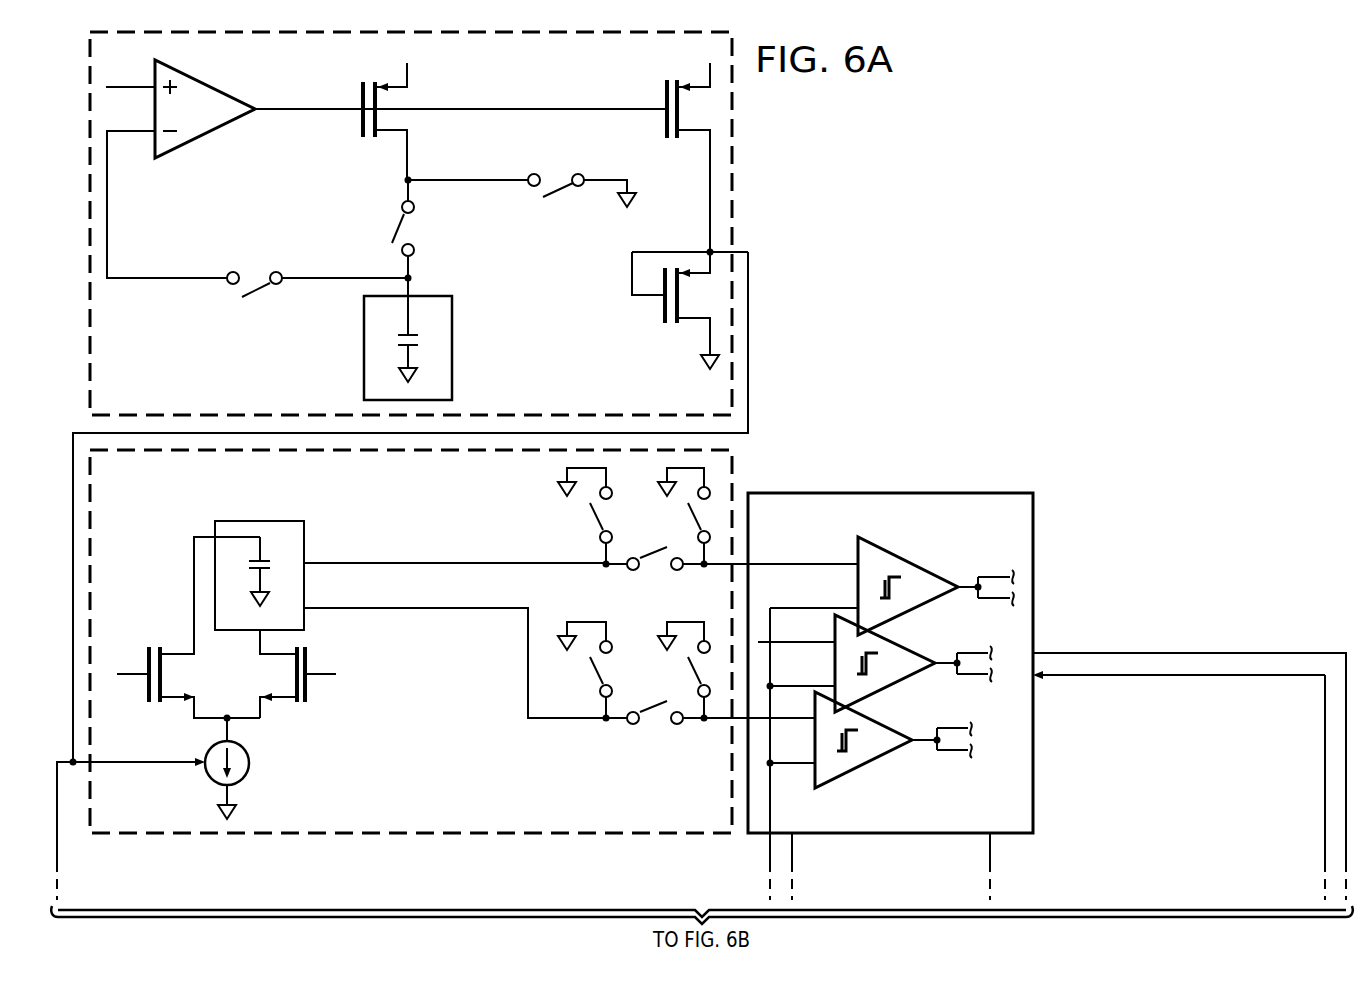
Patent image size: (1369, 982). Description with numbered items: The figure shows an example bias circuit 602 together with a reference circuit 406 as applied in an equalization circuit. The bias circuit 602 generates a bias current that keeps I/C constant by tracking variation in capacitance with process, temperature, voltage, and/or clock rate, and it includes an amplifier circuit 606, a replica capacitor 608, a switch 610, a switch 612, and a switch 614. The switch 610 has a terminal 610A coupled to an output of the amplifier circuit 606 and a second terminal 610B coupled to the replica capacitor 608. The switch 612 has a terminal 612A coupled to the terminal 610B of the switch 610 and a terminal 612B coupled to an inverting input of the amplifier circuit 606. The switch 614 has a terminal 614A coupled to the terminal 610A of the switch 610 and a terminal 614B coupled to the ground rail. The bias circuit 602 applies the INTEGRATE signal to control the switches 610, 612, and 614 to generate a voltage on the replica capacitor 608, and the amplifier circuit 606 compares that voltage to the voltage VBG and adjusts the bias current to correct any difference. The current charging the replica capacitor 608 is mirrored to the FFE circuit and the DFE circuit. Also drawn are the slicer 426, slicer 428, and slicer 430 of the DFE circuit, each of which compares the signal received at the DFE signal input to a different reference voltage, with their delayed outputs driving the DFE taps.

The bias circuit 602 is at (742, 196).
The amplifier circuit 606 is at (203, 82).
The replica capacitor 608 is at (364, 353).
The switch 610 is at (444, 238).
The terminal 610A is at (410, 191).
The second terminal 610B is at (412, 268).
The switch 612 is at (257, 214).
The terminal 612A is at (317, 257).
The terminal 612B is at (226, 276).
The switch 614 is at (527, 161).
The terminal 614A is at (515, 180).
The terminal 614B is at (618, 157).
The reference circuit 406 is at (299, 843).
The slicer 426 is at (883, 769).
The slicer 428 is at (911, 641).
The slicer 430 is at (924, 557).